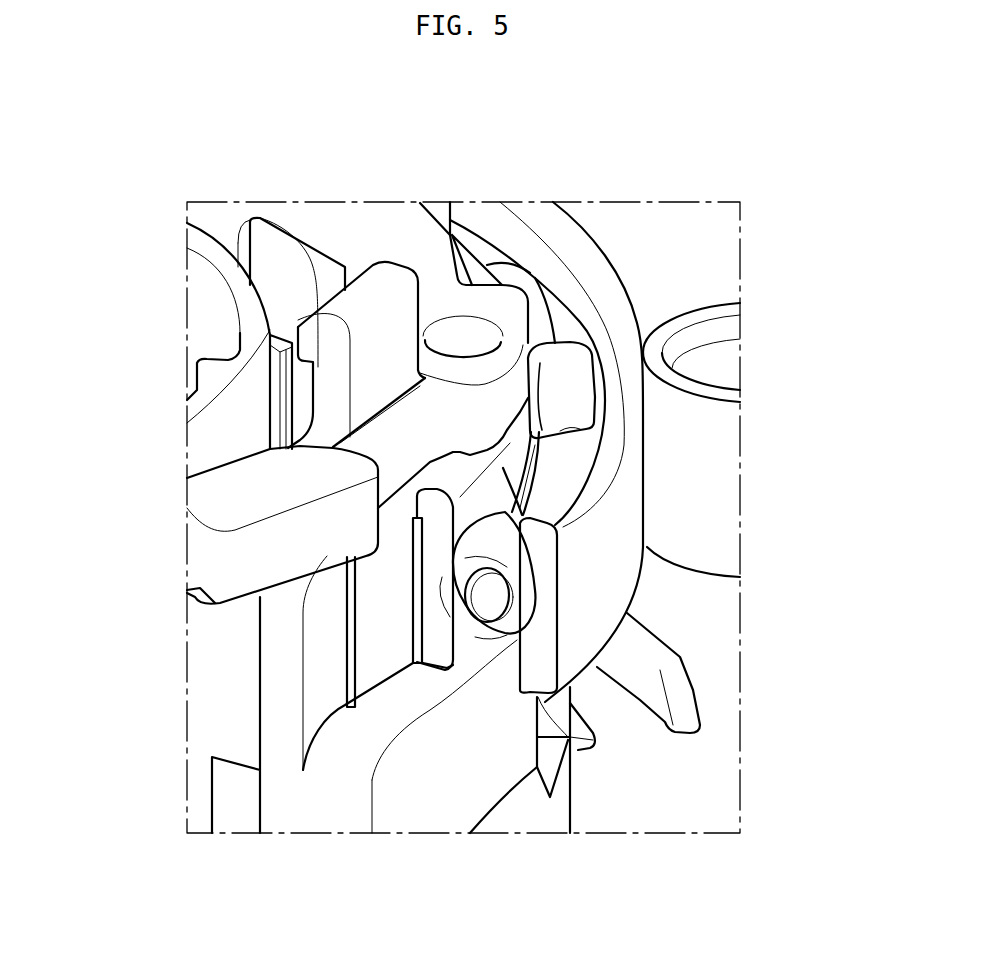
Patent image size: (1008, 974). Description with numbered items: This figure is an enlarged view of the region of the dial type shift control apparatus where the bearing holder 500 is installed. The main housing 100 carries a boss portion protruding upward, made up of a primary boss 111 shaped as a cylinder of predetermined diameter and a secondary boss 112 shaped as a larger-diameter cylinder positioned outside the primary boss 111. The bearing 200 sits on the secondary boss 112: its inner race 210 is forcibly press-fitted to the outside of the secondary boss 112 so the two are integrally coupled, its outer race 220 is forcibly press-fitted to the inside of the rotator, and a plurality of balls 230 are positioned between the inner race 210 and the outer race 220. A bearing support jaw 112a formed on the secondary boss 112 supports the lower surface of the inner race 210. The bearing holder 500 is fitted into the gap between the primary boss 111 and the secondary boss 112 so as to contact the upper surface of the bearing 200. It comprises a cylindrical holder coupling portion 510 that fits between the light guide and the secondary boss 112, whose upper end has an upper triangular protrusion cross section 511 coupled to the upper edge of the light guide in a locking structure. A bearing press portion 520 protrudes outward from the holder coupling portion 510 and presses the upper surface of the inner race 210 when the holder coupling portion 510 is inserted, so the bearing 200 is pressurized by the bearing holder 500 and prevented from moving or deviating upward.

The main housing 100 is at (708, 771).
The primary boss 111 is at (205, 445).
The secondary boss 112 is at (397, 650).
The bearing support jaw 112a is at (392, 707).
The bearing 200 is at (605, 248).
The inner race 210 is at (497, 478).
The outer race 220 is at (608, 265).
The balls 230 is at (570, 390).
The bearing holder 500 is at (176, 533).
The holder coupling portion 510 is at (330, 392).
The upper triangular protrusion cross section 511 is at (378, 283).
The bearing press portion 520 is at (512, 303).